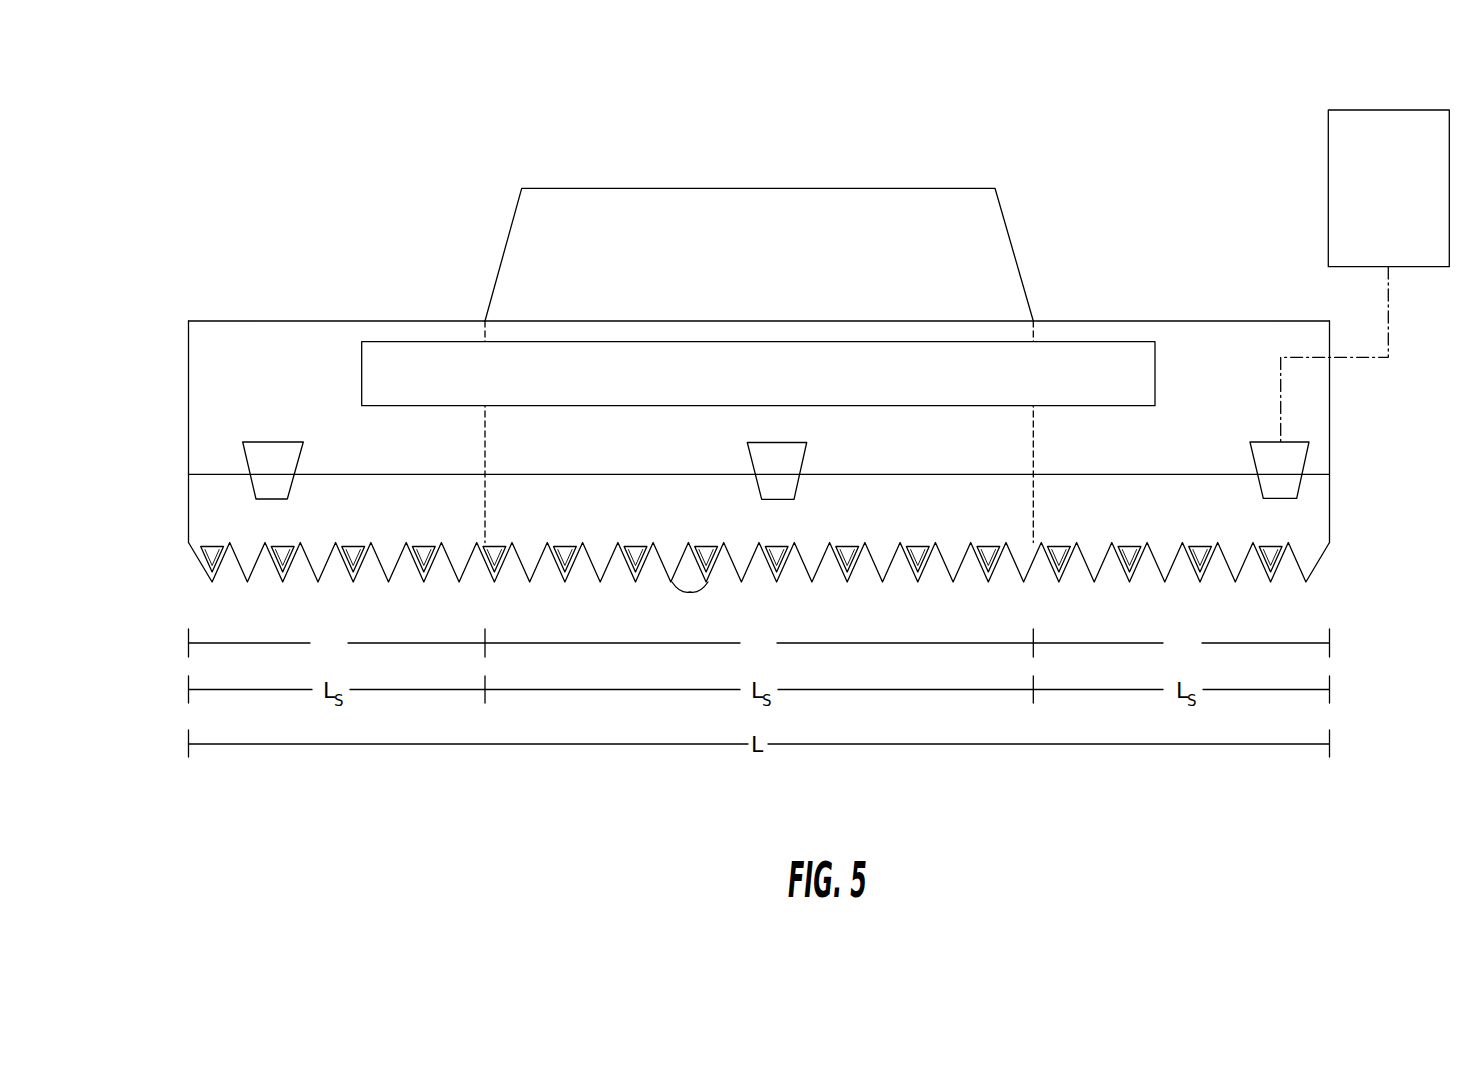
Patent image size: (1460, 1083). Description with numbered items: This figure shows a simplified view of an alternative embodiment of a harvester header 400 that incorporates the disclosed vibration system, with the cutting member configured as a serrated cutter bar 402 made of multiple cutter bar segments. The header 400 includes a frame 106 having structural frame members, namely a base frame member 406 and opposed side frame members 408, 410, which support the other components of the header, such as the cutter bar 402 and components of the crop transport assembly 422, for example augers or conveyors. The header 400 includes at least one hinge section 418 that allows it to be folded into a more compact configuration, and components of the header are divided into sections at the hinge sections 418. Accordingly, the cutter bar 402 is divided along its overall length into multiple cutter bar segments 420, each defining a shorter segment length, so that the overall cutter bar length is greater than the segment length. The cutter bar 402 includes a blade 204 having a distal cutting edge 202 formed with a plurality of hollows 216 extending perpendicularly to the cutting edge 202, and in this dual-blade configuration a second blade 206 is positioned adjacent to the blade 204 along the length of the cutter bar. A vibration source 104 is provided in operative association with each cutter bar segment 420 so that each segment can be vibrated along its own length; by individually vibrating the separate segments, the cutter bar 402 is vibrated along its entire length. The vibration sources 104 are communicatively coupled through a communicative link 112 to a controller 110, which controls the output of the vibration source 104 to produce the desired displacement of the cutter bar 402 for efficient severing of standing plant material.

The header 400 is at (1112, 128).
The frame 106 is at (757, 401).
The side frame member 410 is at (187, 333).
The base frame member 406 is at (243, 348).
The side frame member 408 is at (1330, 420).
The hinge section 418 is at (484, 320).
The crop transport assembly 422 is at (1158, 376).
The cutter bar 402 is at (1316, 514).
The vibration source 104 is at (276, 442).
The controller 110 is at (1405, 200).
The communicative link 112 is at (1389, 334).
The blade 204 is at (242, 572).
The second blade 206 is at (287, 572).
The hollow 216 is at (407, 581).
The cutting edge 202 is at (690, 592).
The cutter bar segment 420 is at (759, 643).